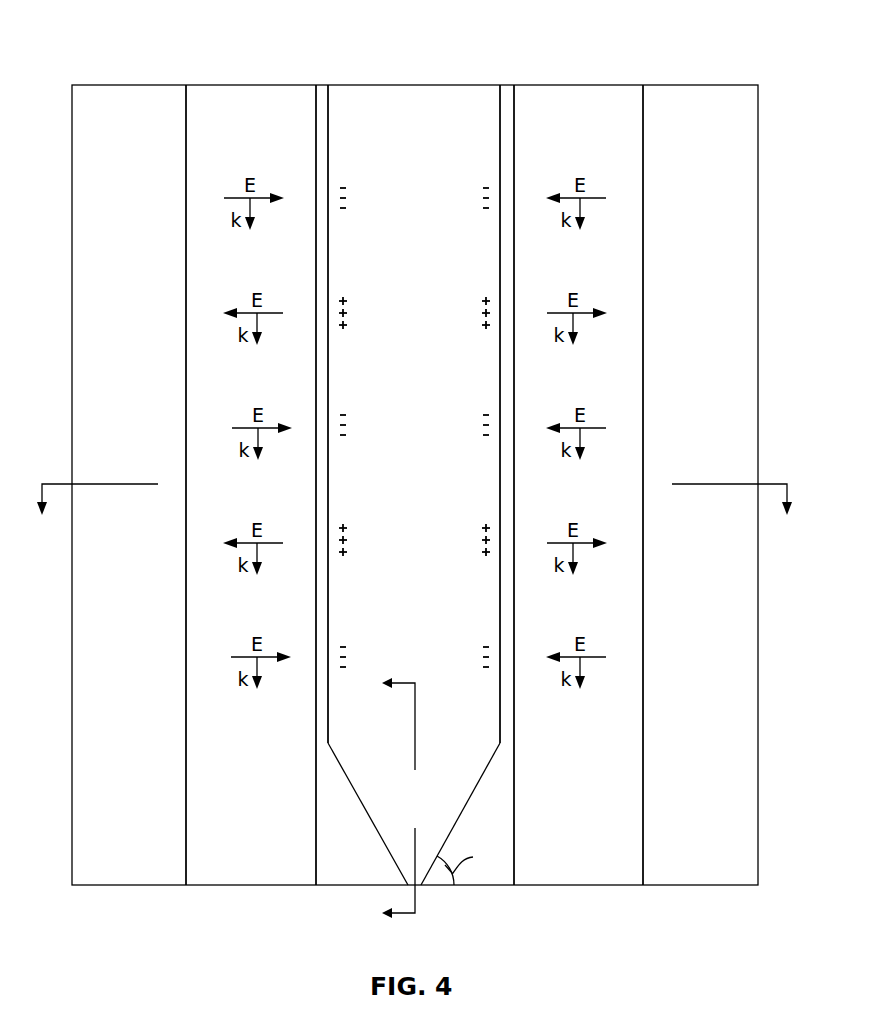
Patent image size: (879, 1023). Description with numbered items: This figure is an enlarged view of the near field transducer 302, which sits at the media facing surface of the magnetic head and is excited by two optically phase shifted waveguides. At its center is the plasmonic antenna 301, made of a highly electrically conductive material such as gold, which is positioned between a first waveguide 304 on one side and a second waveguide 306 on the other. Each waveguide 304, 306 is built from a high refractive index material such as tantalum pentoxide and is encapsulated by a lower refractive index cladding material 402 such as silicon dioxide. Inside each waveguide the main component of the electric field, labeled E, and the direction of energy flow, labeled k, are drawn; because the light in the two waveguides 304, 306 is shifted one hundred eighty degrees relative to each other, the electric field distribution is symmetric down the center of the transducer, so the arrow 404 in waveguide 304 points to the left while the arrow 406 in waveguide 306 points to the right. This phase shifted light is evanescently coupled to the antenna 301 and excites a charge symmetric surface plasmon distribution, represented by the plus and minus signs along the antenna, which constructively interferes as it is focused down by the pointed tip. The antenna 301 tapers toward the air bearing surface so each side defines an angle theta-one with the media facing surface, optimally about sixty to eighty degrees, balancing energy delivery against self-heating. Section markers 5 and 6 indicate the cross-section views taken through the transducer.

The plasmonic antenna 301 is at (400, 112).
The near field transducer 302 is at (748, 98).
The waveguide 304 is at (587, 113).
The waveguide 306 is at (240, 100).
The cladding material 402 is at (118, 100).
The arrow 404 is at (567, 197).
The arrow 406 is at (238, 197).
The section line 5 is at (413, 500).
The section line 6 is at (398, 797).